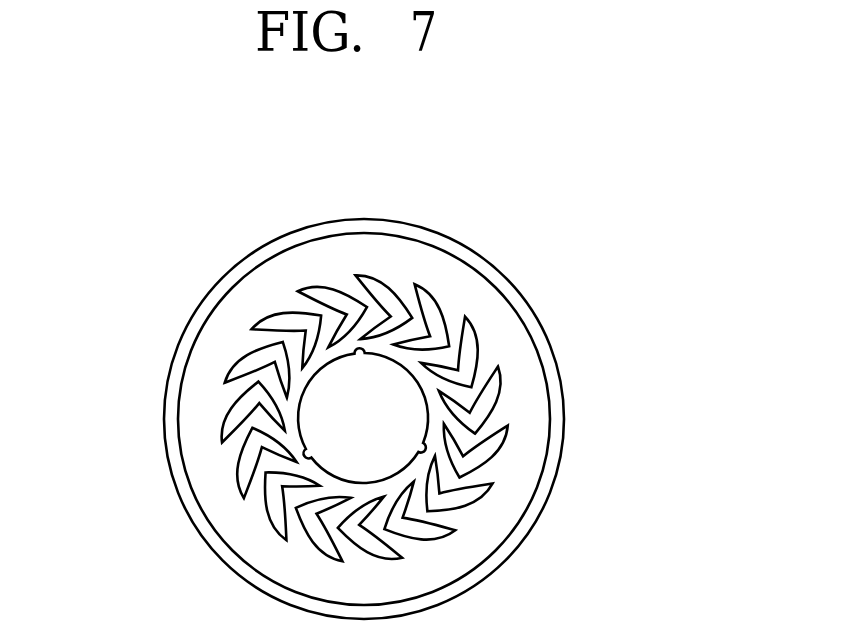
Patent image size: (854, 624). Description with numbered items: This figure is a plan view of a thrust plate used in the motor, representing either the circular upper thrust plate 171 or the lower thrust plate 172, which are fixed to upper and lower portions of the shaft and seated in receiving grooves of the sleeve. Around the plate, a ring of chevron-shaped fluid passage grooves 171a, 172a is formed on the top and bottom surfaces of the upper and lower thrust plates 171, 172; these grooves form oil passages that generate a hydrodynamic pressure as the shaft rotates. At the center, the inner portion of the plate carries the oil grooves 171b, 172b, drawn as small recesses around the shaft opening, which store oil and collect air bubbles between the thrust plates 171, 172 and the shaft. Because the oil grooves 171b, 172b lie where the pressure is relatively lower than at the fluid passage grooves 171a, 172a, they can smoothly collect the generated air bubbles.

The upper thrust plate 171 is at (400, 381).
The lower thrust plate 172 is at (400, 381).
The fluid passage groove 171a is at (477, 335).
The fluid passage groove 172a is at (467, 412).
The oil groove 171b is at (336, 360).
The oil groove 172b is at (247, 355).